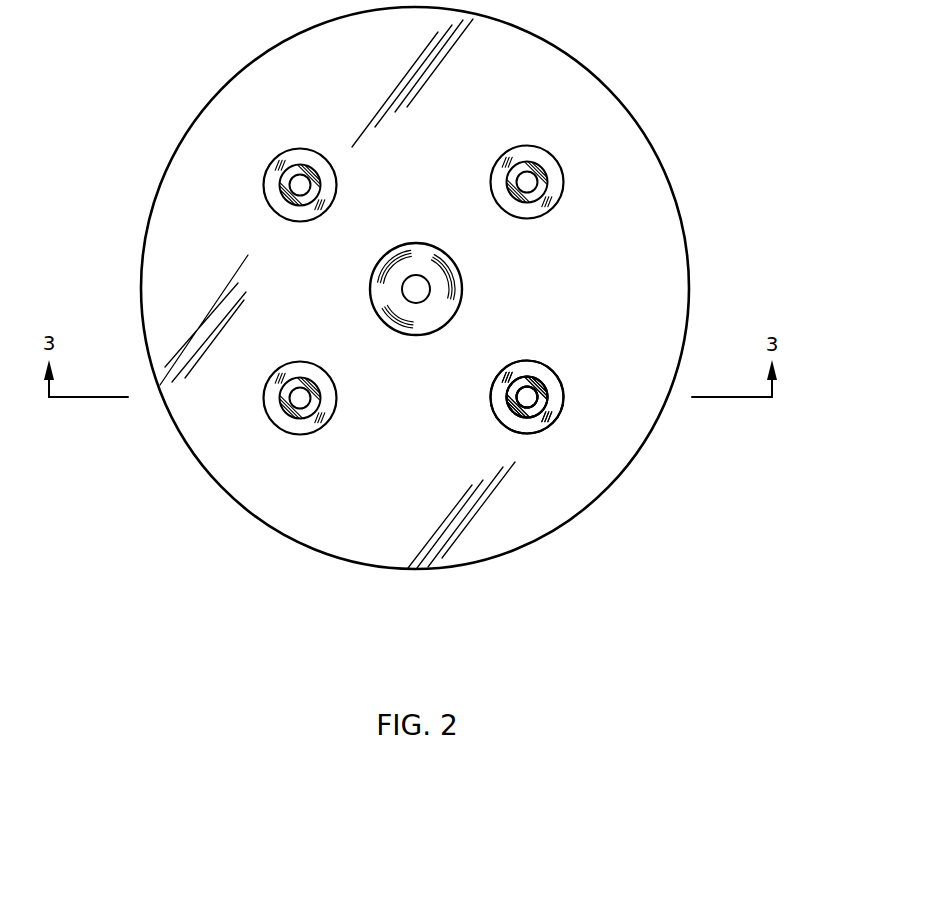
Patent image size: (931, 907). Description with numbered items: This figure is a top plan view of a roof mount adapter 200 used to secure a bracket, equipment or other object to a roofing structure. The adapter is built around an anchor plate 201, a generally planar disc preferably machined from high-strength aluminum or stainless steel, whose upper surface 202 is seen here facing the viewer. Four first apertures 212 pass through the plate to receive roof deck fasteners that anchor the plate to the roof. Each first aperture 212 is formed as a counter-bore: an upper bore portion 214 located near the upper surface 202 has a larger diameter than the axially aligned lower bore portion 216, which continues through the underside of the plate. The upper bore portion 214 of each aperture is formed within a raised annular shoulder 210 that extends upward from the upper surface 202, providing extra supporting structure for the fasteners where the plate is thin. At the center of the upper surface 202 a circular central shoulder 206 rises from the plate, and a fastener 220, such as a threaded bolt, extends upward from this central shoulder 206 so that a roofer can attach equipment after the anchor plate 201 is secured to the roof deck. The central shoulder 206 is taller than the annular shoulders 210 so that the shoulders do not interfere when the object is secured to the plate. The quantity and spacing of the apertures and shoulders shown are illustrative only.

The roof mount adapter 200 is at (632, 550).
The anchor plate 201 is at (675, 202).
The upper surface 202 is at (628, 181).
The central shoulder 206 is at (414, 253).
The raised annular shoulder 210 is at (492, 388).
The first apertures 212 is at (537, 300).
The upper bore portion 214 is at (548, 400).
The lower bore portion 216 is at (533, 383).
The fastener 220 is at (410, 306).